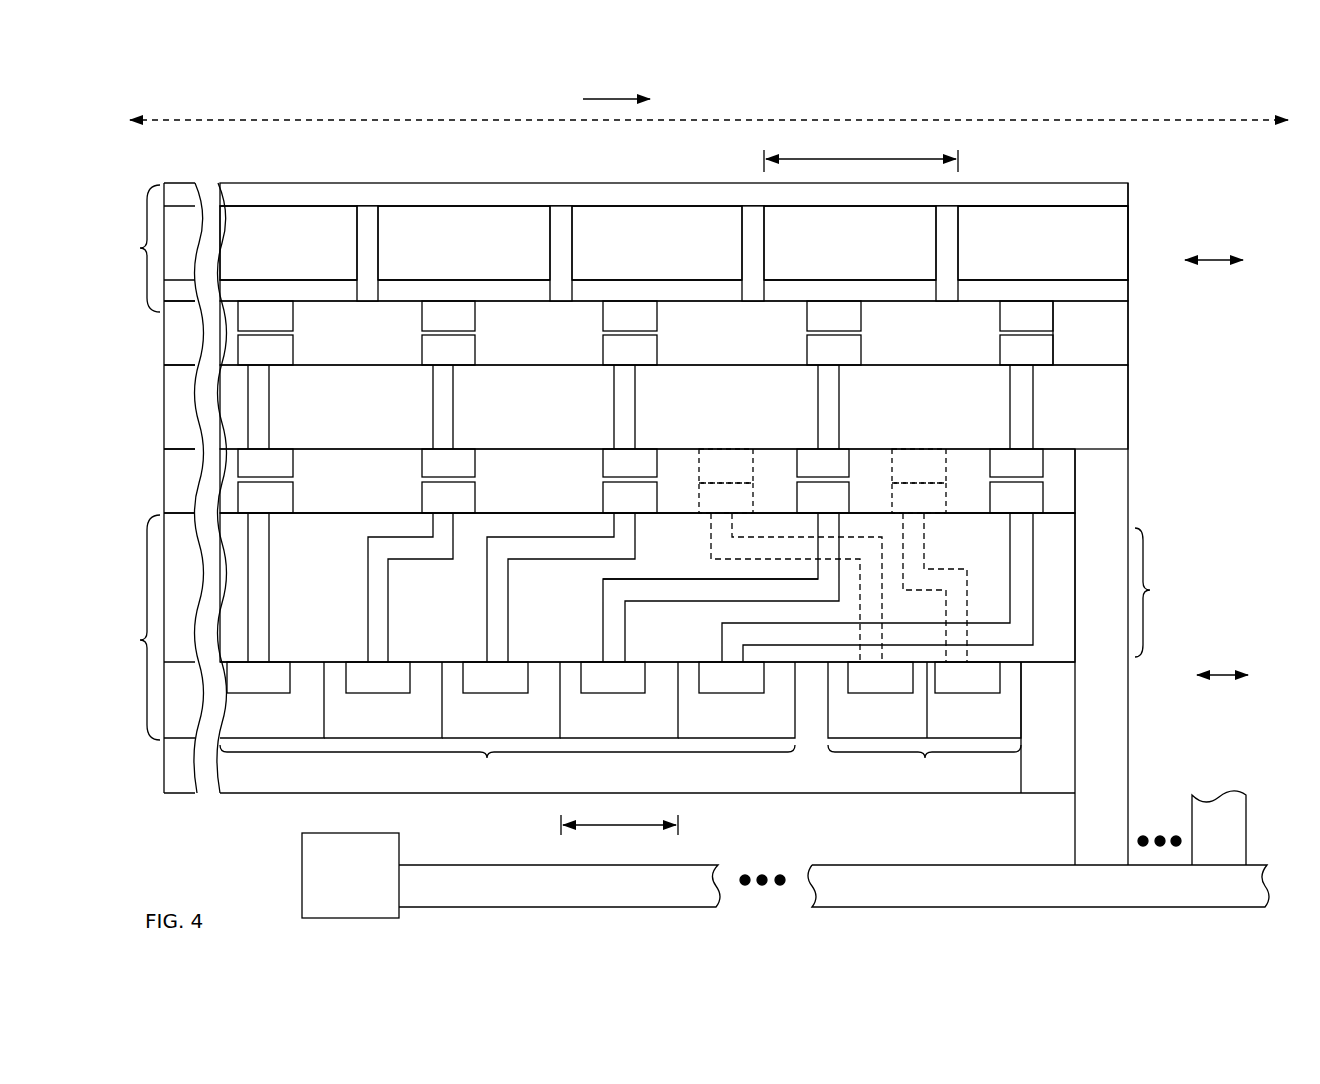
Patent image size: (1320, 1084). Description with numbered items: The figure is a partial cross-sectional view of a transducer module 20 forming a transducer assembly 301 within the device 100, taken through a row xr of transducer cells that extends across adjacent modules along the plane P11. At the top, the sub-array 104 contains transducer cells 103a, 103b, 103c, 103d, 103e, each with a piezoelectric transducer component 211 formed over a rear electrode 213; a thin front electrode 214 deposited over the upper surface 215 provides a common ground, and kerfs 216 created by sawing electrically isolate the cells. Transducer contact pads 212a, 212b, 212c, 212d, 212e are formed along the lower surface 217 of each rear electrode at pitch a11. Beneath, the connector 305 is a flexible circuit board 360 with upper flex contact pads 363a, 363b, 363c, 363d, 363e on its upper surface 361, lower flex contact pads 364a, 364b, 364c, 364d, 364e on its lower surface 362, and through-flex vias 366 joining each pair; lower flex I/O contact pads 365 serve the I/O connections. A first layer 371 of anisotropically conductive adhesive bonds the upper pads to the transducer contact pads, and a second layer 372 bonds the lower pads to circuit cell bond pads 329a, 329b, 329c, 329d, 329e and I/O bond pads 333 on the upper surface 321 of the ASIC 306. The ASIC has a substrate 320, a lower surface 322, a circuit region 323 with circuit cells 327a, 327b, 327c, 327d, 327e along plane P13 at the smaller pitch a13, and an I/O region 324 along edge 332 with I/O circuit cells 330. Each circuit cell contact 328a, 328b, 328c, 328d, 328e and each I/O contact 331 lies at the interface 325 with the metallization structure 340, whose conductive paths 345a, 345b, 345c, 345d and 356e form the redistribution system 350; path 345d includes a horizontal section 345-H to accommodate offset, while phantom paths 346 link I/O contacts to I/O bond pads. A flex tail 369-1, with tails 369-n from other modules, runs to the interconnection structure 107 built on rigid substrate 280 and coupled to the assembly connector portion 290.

The transducer module 20 is at (316, 150).
The acoustic transducer device 100 is at (1243, 88).
The sub-array 104 is at (130, 248).
The interconnection structure 107 is at (923, 908).
The transducer component 211 is at (1107, 238).
The rear electrode 213 is at (1107, 296).
The front electrode 214 is at (1107, 197).
The upper surface 215 is at (1053, 205).
The kerfs 216 is at (367, 228).
The lower surface 217 is at (1095, 303).
The transducer cell 103a is at (288, 243).
The transducer cell 103b is at (464, 243).
The transducer cell 103c is at (657, 243).
The transducer cell 103d is at (850, 243).
The transducer cell 103e is at (1043, 243).
The transducer contact pad 212a is at (265, 316).
The transducer contact pad 212b is at (448, 316).
The transducer contact pad 212c is at (630, 316).
The transducer contact pad 212d is at (834, 316).
The transducer contact pad 212e is at (1026, 316).
The upper flex contact pad 363a is at (265, 350).
The upper flex contact pad 363b is at (448, 350).
The upper flex contact pad 363c is at (630, 350).
The upper flex contact pad 363d is at (834, 350).
The upper flex contact pad 363e is at (1026, 350).
The lower flex contact pad 364a is at (265, 463).
The lower flex contact pad 364b is at (448, 463).
The lower flex contact pad 364c is at (630, 463).
The lower flex contact pad 364d is at (823, 463).
The lower flex contact pad 364e is at (1016, 463).
The circuit cell bond pad 329a is at (265, 497).
The circuit cell bond pad 329b is at (448, 497).
The circuit cell bond pad 329c is at (630, 497).
The circuit cell bond pad 329d is at (823, 497).
The circuit cell bond pad 329e is at (1016, 497).
The lower flex I/O contact pad 365 is at (822, 466).
The I/O bond pad 333 is at (822, 498).
The circuit cell contact 328a is at (258, 677).
The circuit cell contact 328b is at (378, 677).
The circuit cell contact 328c is at (495, 677).
The circuit cell contact 328d is at (613, 677).
The circuit cell contact 328e is at (731, 677).
The transducer circuit cell 327a is at (272, 700).
The transducer circuit cell 327b is at (383, 700).
The transducer circuit cell 327c is at (501, 700).
The transducer circuit cell 327d is at (619, 700).
The transducer circuit cell 327e is at (736, 700).
The I/O circuit cell 330 is at (924, 700).
The I/O contact 331 is at (924, 677).
The metallization structure 340 is at (647, 587).
The conductive path 345a is at (282, 644).
The conductive path 345b is at (400, 650).
The conductive path 345c is at (518, 626).
The conductive path 345d is at (634, 656).
The horizontal section 345-H is at (647, 572).
The conductive path for I/O connection 346 is at (933, 558).
The redistribution system 350 is at (1163, 592).
The redistribution trace 356e is at (1044, 590).
The flexible circuit board 360 is at (1085, 631).
The upper surface 361 is at (227, 363).
The lower surface 362 is at (225, 450).
The through-flex via 366 is at (248, 409).
The flex tail 369-1 is at (1128, 504).
The flex tail 369-n is at (1213, 825).
The first layer of anisotropically conductive adhesive 371 is at (674, 333).
The second layer of anisotropically conductive adhesive 372 is at (647, 481).
The connector 305 is at (1142, 415).
The ASIC 306 is at (130, 627).
The substrate 320 is at (803, 775).
The upper surface 321 is at (1055, 513).
The lower surface 322 is at (1043, 793).
The circuit region 323 is at (507, 766).
The I/O region 324 is at (924, 768).
The interface 325 is at (1055, 663).
The edge 332 is at (1086, 750).
The rigid substrate 280 is at (834, 871).
The assembly connector portion 290 is at (350, 875).
The transducer assembly 301 is at (945, 118).
The plane P11 is at (1213, 260).
The second plane P13 is at (1225, 675).
The pitch spacing a11 is at (861, 152).
The second pitch spacing a13 is at (619, 835).
The row xr is at (616, 87).